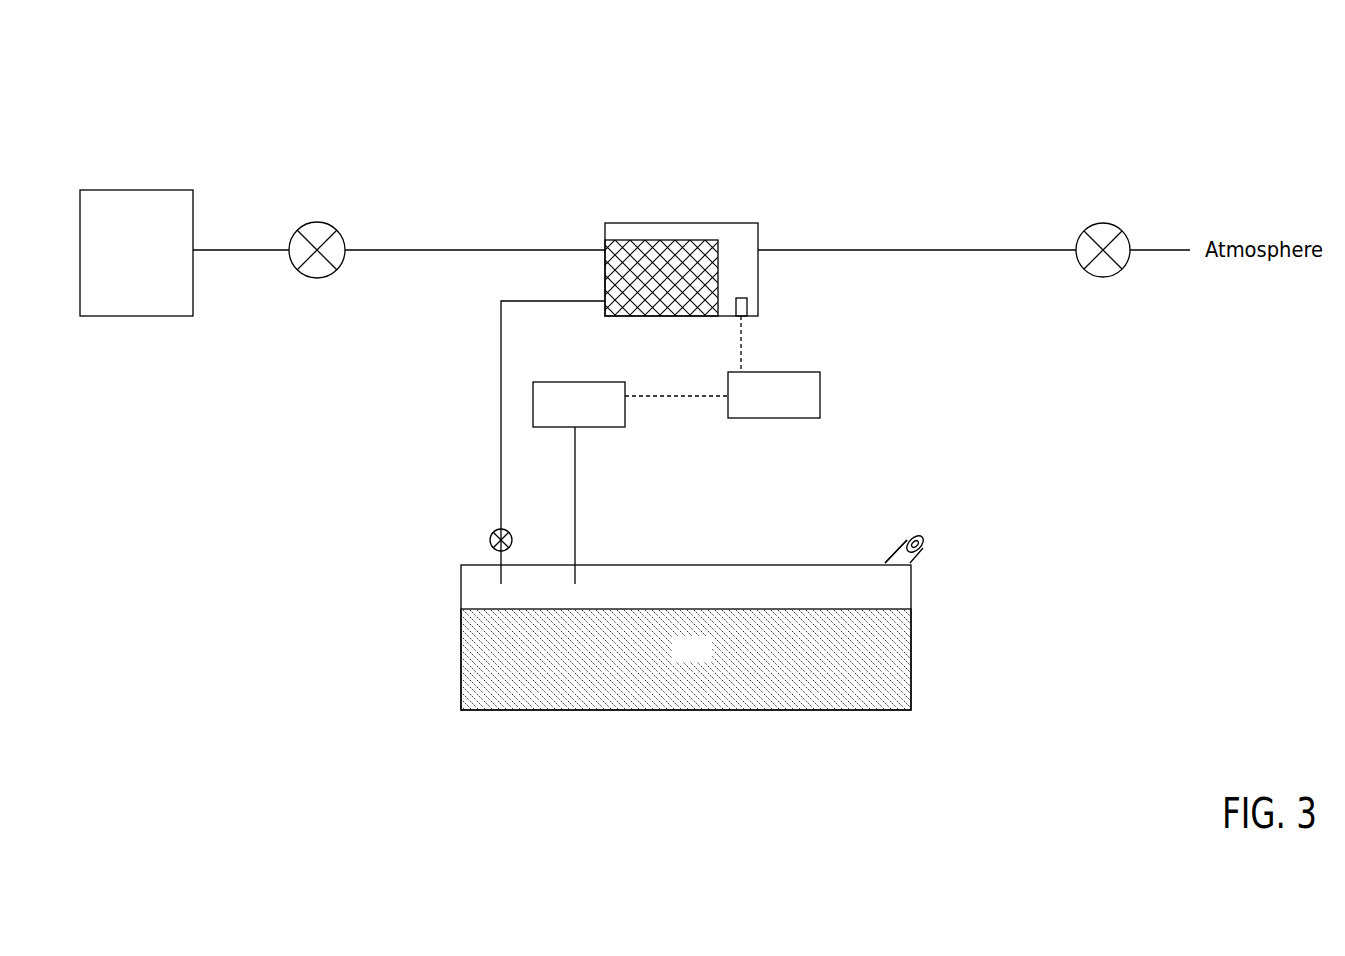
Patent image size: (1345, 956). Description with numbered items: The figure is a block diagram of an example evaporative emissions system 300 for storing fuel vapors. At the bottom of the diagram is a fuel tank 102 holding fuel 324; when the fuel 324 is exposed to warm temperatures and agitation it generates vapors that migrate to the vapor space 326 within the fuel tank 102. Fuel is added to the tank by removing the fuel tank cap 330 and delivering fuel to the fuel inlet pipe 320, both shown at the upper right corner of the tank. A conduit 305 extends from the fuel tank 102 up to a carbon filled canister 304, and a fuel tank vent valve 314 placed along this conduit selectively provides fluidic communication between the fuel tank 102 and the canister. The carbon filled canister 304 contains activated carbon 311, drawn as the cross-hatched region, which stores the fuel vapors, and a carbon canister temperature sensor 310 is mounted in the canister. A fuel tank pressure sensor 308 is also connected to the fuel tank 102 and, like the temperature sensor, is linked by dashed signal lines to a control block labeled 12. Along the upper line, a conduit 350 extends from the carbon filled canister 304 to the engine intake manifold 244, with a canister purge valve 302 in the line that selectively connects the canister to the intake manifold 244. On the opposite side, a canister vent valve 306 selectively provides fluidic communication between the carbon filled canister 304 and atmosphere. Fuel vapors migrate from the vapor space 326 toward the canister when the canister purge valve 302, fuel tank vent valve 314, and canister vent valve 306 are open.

The evaporative emissions system 300 is at (163, 76).
The engine intake manifold 244 is at (136, 253).
The canister purge valve 302 is at (316, 222).
The conduit 350 is at (448, 248).
The carbon filled canister 304 is at (664, 223).
The activated carbon 311 is at (605, 243).
The carbon canister temperature sensor 310 is at (744, 306).
The controller 12 is at (774, 395).
The fuel tank pressure sensor 308 is at (563, 382).
The conduit 305 is at (506, 299).
The canister vent valve 306 is at (1103, 223).
The fuel tank vent valve 314 is at (506, 531).
The fuel tank 102 is at (912, 575).
The vapor space 326 is at (690, 590).
The fuel 324 is at (686, 659).
The fuel inlet pipe 320 is at (886, 561).
The fuel tank cap 330 is at (923, 540).